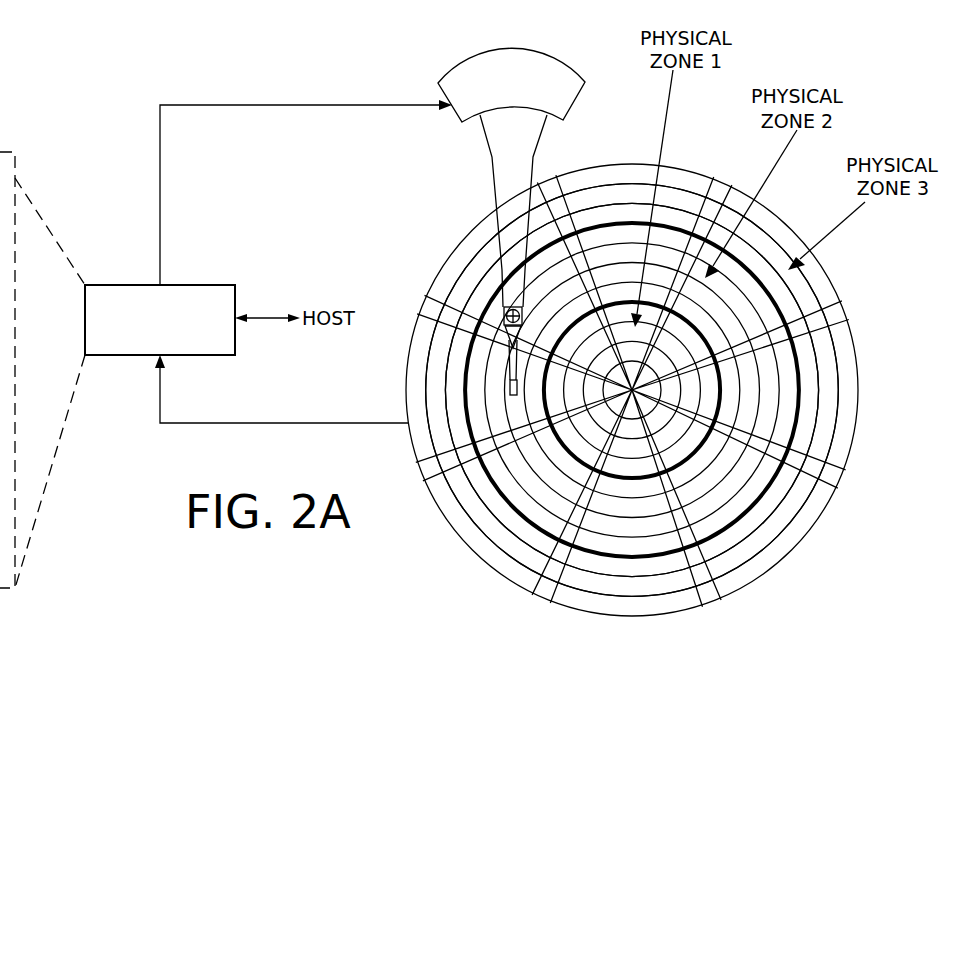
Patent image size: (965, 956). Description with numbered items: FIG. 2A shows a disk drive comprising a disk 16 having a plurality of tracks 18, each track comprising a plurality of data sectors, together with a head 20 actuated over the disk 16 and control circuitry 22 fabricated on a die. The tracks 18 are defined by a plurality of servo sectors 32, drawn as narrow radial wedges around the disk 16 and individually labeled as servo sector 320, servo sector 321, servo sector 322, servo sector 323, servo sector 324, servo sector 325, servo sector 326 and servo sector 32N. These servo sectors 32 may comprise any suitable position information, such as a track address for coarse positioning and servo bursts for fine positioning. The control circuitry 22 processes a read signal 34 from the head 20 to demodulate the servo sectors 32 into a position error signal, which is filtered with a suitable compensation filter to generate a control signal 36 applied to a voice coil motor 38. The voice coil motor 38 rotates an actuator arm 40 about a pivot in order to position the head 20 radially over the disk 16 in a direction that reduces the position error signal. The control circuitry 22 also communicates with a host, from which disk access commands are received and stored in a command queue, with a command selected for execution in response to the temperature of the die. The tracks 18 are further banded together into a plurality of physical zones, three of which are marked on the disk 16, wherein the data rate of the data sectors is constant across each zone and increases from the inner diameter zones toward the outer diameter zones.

The disk 16 is at (447, 549).
The tracks 18 is at (628, 193).
The head 20 is at (493, 393).
The control circuitry 22 is at (200, 285).
The servo sectors 32 is at (640, 392).
The servo sector 321 is at (832, 308).
The servo sector 320 is at (718, 187).
The servo sector 32N is at (550, 186).
The servo sector 326 is at (428, 300).
The servo sector 325 is at (423, 478).
The servo sector 324 is at (543, 594).
The servo sector 323 is at (710, 595).
The servo sector 322 is at (832, 480).
The read signal 34 is at (295, 425).
The control signal 36 is at (160, 181).
The voice coil motor 38 is at (455, 117).
The actuator arm 40 is at (493, 195).